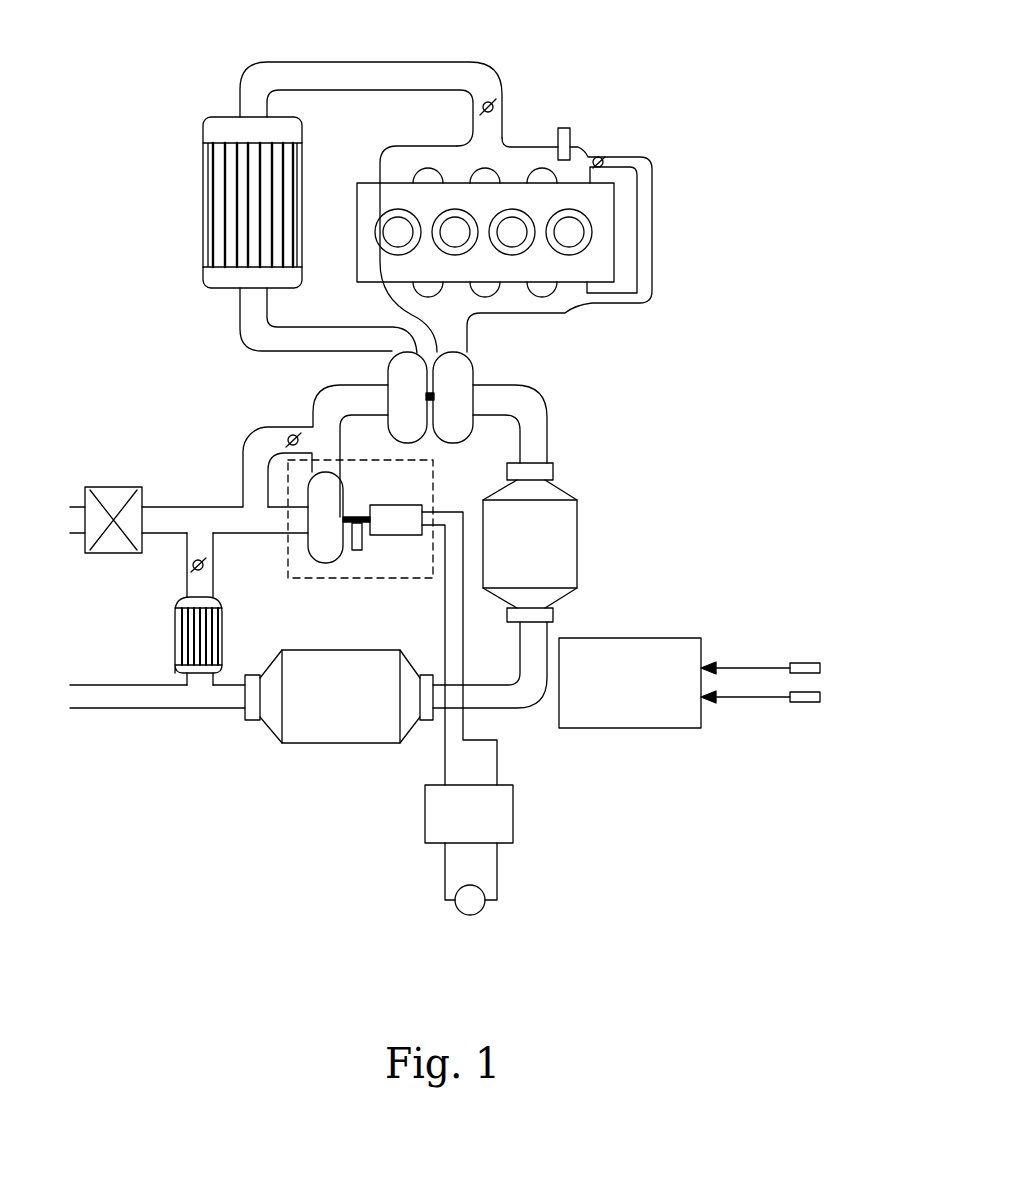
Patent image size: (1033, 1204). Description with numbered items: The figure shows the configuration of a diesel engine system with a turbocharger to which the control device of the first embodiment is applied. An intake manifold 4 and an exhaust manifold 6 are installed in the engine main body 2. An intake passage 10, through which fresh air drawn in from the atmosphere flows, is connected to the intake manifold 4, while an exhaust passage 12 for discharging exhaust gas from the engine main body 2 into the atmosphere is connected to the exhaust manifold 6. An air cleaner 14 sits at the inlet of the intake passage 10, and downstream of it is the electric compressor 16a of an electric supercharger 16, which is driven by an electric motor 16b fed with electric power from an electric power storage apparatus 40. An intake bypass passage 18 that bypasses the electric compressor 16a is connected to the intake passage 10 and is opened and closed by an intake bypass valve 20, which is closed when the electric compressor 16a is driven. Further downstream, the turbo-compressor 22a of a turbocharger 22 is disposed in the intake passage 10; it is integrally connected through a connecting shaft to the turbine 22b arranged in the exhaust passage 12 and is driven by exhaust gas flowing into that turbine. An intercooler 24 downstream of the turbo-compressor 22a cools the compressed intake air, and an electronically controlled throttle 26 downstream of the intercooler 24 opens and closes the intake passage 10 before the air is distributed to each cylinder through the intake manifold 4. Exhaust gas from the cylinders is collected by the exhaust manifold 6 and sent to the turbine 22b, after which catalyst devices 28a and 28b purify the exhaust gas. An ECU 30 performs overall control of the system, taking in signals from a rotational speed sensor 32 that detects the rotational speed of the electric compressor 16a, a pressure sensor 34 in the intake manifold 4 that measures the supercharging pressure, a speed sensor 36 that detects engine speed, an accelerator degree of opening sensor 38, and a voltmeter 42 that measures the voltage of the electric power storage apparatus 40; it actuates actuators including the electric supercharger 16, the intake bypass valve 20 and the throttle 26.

The engine main body 2 is at (614, 66).
The intake manifold 4 is at (526, 145).
The exhaust manifold 6 is at (563, 314).
The intake passage 10 is at (360, 92).
The exhaust passage 12 is at (550, 433).
The air cleaner 14 is at (112, 485).
The electric supercharger 16 is at (334, 544).
The electric compressor 16a is at (308, 555).
The electric motor 16b is at (380, 507).
The intake bypass passage 18 is at (241, 462).
The intake bypass valve 20 is at (287, 434).
The turbocharger 22 is at (431, 420).
The turbo-compressor 22a is at (387, 380).
The turbine 22b is at (476, 373).
The intercooler 24 is at (200, 200).
The throttle 26 is at (500, 84).
The catalyst device 28a is at (580, 548).
The catalyst device 28b is at (300, 745).
The ECU 30 is at (628, 730).
The rotational speed sensor 32 is at (365, 545).
The pressure sensor 34 is at (572, 133).
The speed sensor 36 is at (810, 660).
The accelerator degree of opening sensor 38 is at (805, 703).
The electric power storage apparatus 40 is at (517, 813).
The voltmeter 42 is at (470, 917).